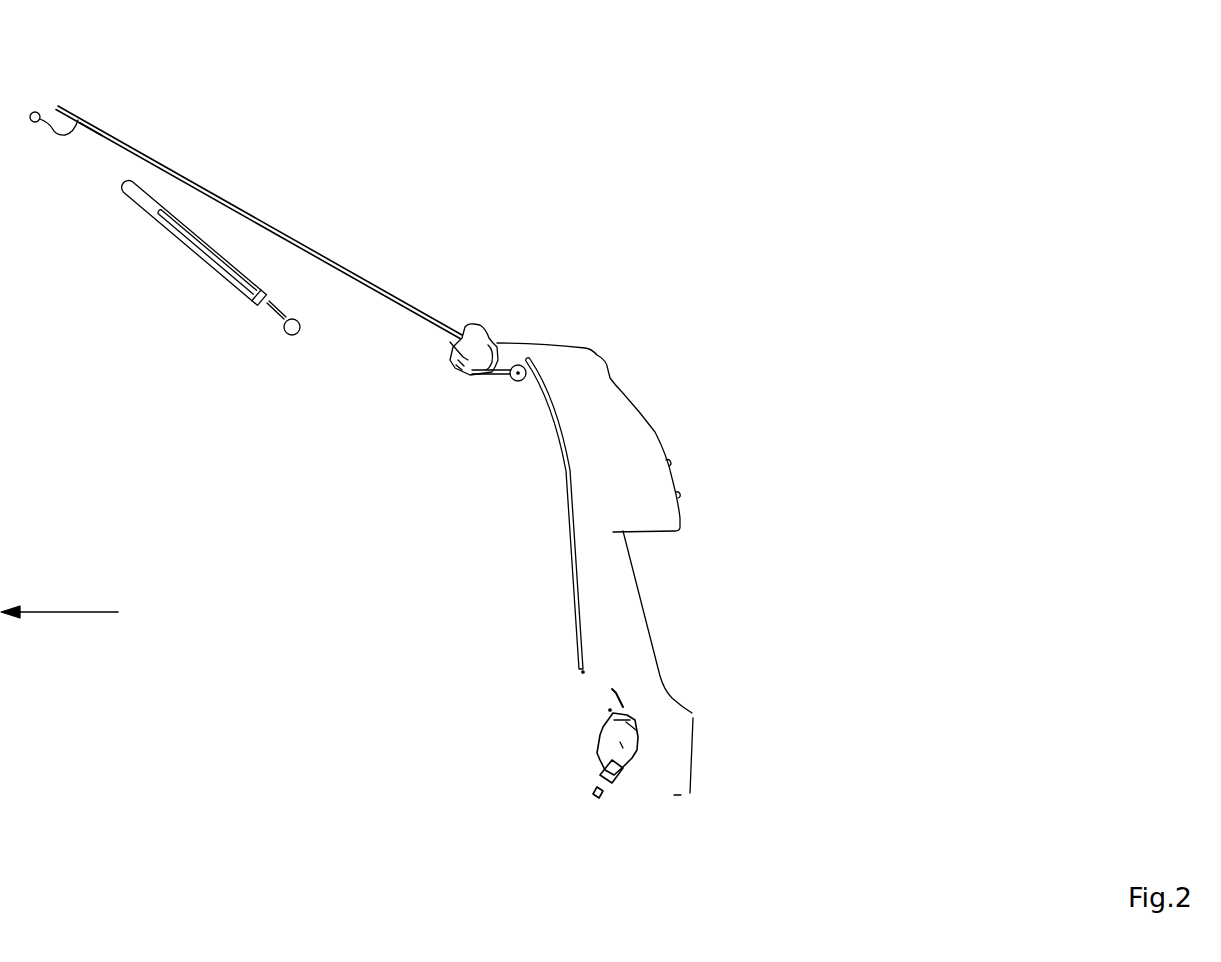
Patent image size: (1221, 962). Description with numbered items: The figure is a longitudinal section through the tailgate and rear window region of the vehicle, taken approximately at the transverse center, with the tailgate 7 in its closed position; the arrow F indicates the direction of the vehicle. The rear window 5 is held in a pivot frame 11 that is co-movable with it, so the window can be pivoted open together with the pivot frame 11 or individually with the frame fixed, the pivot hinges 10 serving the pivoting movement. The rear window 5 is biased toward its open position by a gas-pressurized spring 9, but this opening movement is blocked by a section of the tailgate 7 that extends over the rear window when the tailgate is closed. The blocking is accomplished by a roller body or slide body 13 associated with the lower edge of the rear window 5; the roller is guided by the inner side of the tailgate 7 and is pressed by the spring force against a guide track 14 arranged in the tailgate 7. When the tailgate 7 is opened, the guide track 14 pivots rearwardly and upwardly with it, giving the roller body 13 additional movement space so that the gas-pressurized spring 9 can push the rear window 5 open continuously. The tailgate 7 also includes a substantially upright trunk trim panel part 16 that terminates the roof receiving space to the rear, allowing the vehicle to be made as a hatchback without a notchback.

The rear window 5 is at (182, 172).
The tailgate 7 is at (617, 420).
The gas-pressurized spring 9 is at (200, 266).
The pivot hinge 10 is at (34, 111).
The pivot frame 11 is at (472, 369).
The roller body or slide body 13 is at (521, 381).
The guide track 14 is at (568, 503).
The trunk trim panel part 16 is at (677, 482).
The forward direction of vehicle F is at (57, 612).